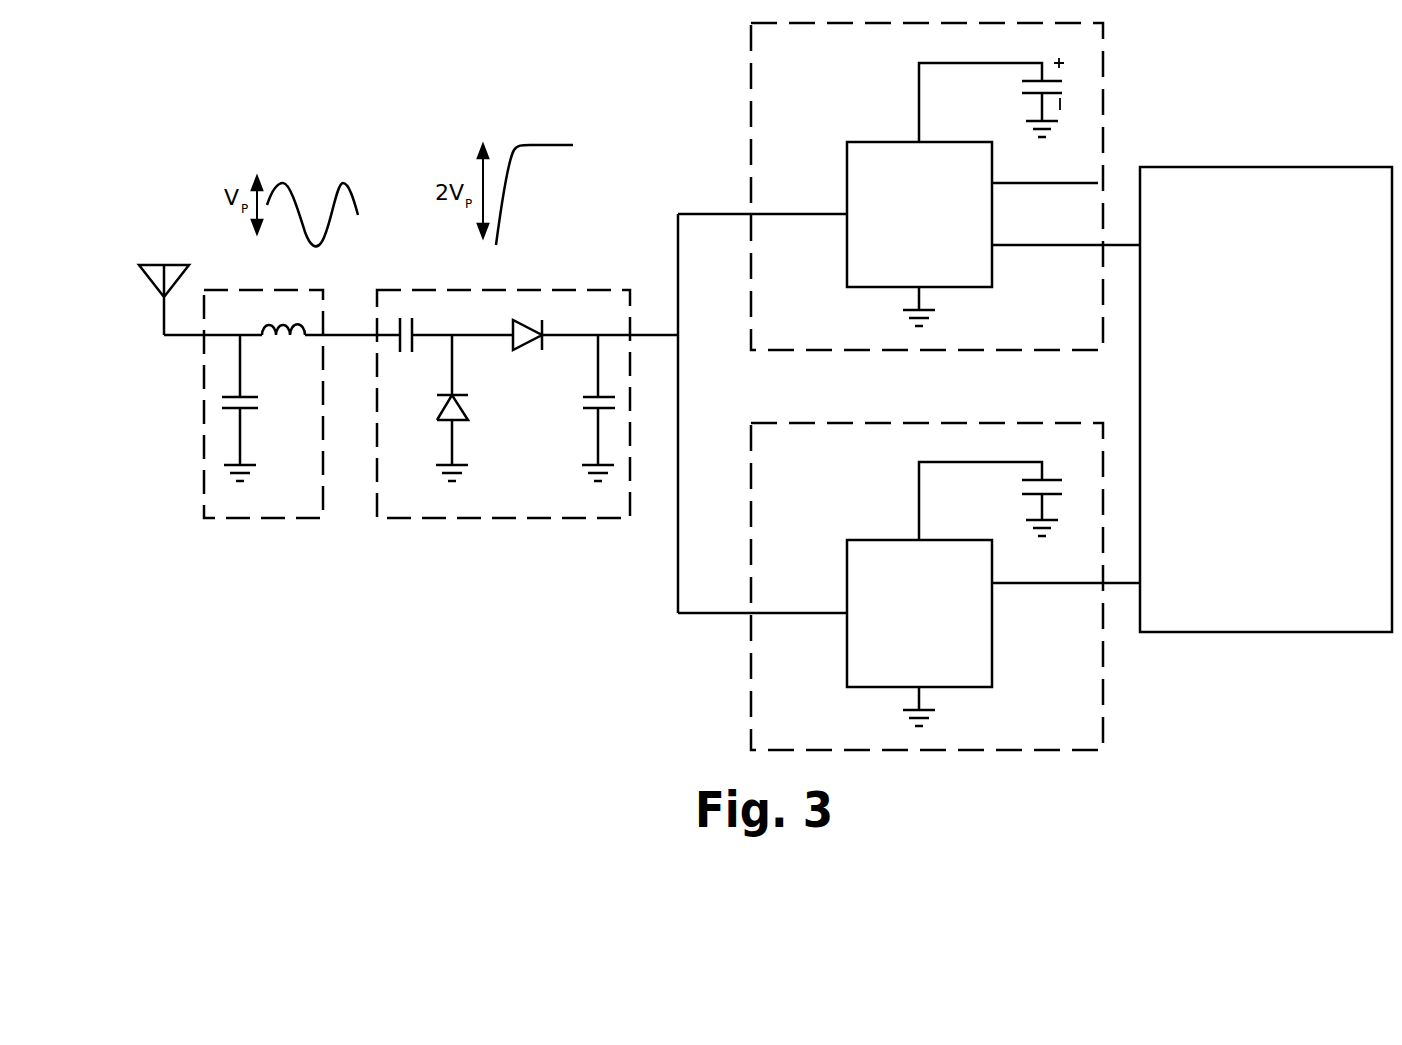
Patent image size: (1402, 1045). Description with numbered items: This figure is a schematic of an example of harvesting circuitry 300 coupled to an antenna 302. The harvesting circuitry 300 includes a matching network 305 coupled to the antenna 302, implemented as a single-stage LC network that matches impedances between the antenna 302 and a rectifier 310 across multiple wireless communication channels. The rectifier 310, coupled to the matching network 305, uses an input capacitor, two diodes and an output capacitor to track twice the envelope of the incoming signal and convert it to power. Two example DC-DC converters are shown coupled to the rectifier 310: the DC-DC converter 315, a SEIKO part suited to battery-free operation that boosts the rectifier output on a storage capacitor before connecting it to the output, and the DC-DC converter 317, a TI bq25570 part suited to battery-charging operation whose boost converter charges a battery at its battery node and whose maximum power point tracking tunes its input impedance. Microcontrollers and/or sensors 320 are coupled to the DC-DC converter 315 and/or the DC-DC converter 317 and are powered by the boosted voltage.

The harvesting circuitry 300 is at (286, 718).
The antenna 302 is at (180, 262).
The matching network 305 is at (264, 593).
The rectifier 310 is at (504, 565).
The DC-DC converter 315 is at (751, 682).
The DC-DC converter 317 is at (751, 84).
The microcontrollers and/or sensors 320 is at (1269, 633).